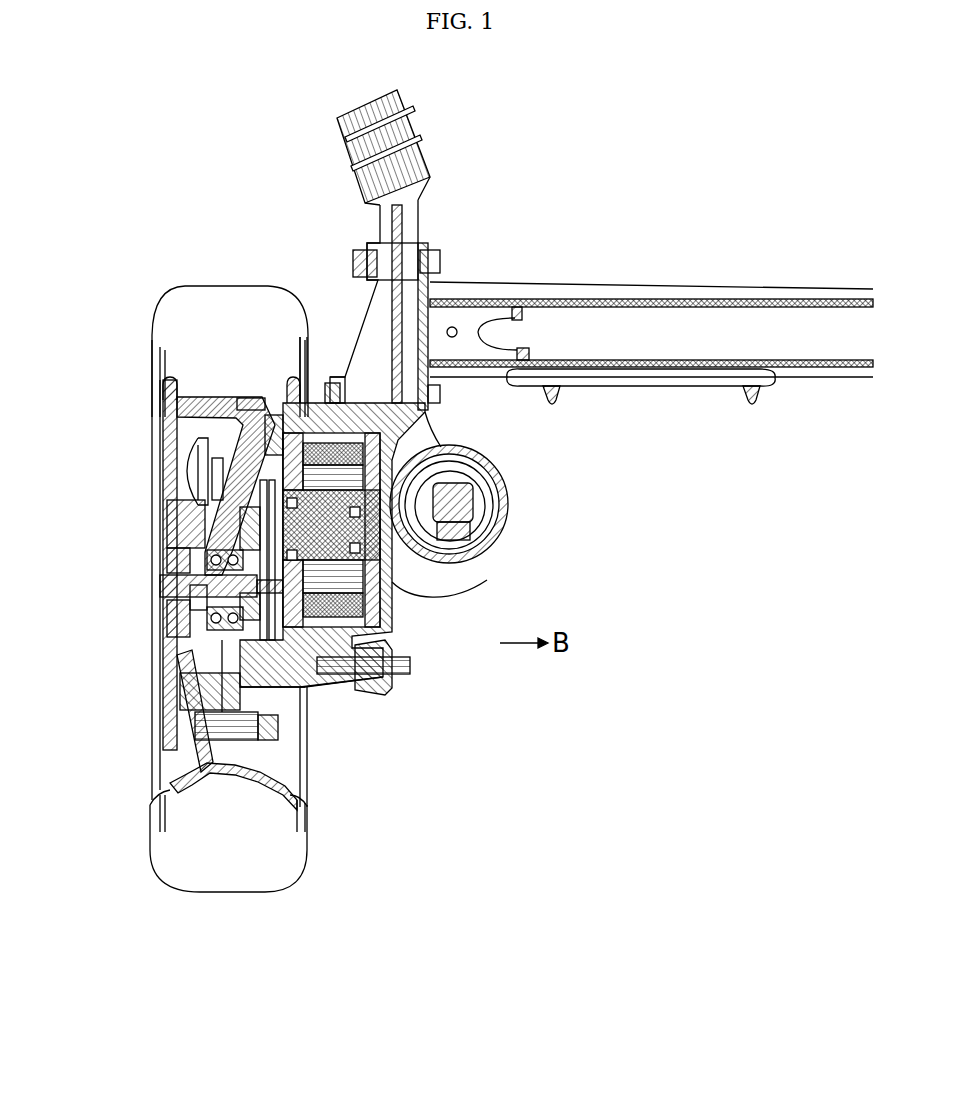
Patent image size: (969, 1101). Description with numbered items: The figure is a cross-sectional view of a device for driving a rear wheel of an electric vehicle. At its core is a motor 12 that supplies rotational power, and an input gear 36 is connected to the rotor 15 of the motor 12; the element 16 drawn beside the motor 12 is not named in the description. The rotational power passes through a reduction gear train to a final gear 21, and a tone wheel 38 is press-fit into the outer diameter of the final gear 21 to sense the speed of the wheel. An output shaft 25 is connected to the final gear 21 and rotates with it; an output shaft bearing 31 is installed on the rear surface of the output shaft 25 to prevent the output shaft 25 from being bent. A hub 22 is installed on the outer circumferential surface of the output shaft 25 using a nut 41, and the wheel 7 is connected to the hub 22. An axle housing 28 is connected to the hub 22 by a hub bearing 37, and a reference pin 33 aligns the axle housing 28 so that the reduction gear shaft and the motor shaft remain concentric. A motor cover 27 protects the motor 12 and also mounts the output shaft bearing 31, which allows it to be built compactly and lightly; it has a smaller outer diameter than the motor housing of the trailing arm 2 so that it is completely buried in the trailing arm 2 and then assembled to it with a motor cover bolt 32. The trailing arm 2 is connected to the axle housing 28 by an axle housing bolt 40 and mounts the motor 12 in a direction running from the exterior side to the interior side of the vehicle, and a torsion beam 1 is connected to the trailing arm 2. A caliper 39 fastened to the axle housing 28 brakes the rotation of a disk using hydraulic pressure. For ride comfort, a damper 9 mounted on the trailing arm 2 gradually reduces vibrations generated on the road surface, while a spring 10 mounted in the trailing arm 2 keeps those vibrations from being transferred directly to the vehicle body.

The torsion beam 1 is at (603, 292).
The trailing arm 2 is at (412, 212).
The wheel 7 is at (226, 892).
The damper 9 is at (392, 688).
The spring 10 is at (472, 560).
The motor 12 is at (352, 403).
The rotor 15 is at (392, 512).
The in-wheel motor 16 is at (383, 612).
The final gear 21 is at (190, 680).
The hub 22 is at (250, 567).
The output shaft 25 is at (250, 590).
The motor cover 27 is at (240, 475).
The axle housing 28 is at (235, 455).
The output shaft bearing 31 is at (332, 687).
The motor cover bolt 32 is at (267, 412).
The reference pin 33 is at (240, 405).
The input gear 36 is at (235, 515).
The hub bearing 37 is at (185, 640).
The tone wheel 38 is at (306, 707).
The caliper 39 is at (200, 735).
The axle housing bolt 40 is at (311, 762).
The nut 41 is at (175, 605).